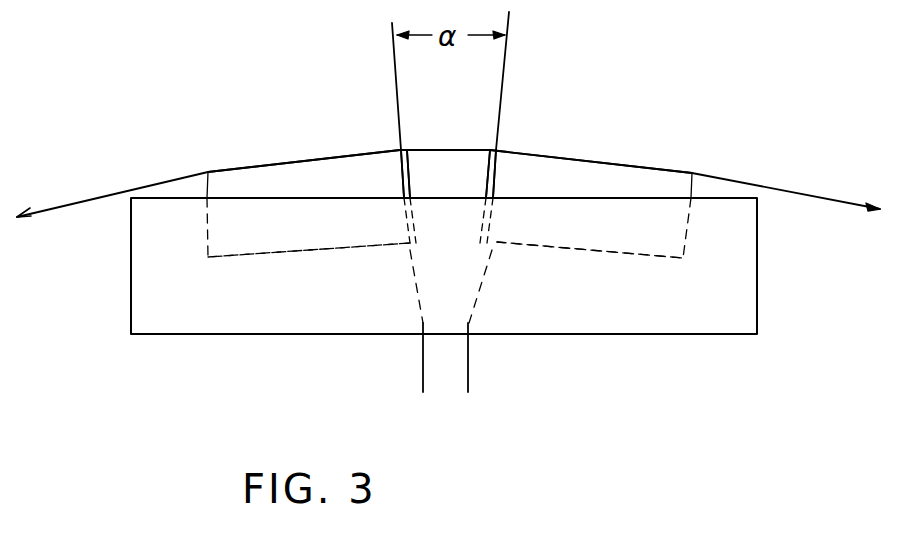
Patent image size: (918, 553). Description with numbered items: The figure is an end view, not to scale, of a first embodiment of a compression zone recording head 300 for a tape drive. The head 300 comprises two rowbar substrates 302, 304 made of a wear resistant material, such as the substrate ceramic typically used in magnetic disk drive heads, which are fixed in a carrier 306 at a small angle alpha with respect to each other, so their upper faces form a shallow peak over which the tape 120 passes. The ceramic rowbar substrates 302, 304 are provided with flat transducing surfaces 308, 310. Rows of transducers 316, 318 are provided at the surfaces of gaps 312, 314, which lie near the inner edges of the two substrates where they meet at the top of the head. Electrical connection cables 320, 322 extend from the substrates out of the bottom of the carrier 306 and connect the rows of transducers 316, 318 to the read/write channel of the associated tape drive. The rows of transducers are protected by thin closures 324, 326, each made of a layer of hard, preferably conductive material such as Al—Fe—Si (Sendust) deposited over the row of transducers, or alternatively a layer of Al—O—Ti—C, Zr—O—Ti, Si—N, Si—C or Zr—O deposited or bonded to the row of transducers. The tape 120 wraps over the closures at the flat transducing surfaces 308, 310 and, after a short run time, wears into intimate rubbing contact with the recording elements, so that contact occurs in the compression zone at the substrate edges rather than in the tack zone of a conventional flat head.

The tape 120 is at (851, 201).
The compression zone recording head 300 is at (690, 353).
The rowbar substrate 302 is at (308, 252).
The rowbar substrate 304 is at (585, 257).
The carrier 306 is at (758, 297).
The flat transducing surface 308 is at (256, 166).
The flat transducing surface 310 is at (628, 165).
The gap 312 is at (398, 150).
The gap 314 is at (497, 150).
The row of transducers 316 is at (396, 168).
The row of transducers 318 is at (500, 170).
The electrical connection cable 320 is at (422, 368).
The electrical connection cable 322 is at (472, 372).
The thin closure 324 is at (410, 153).
The thin closure 326 is at (488, 152).